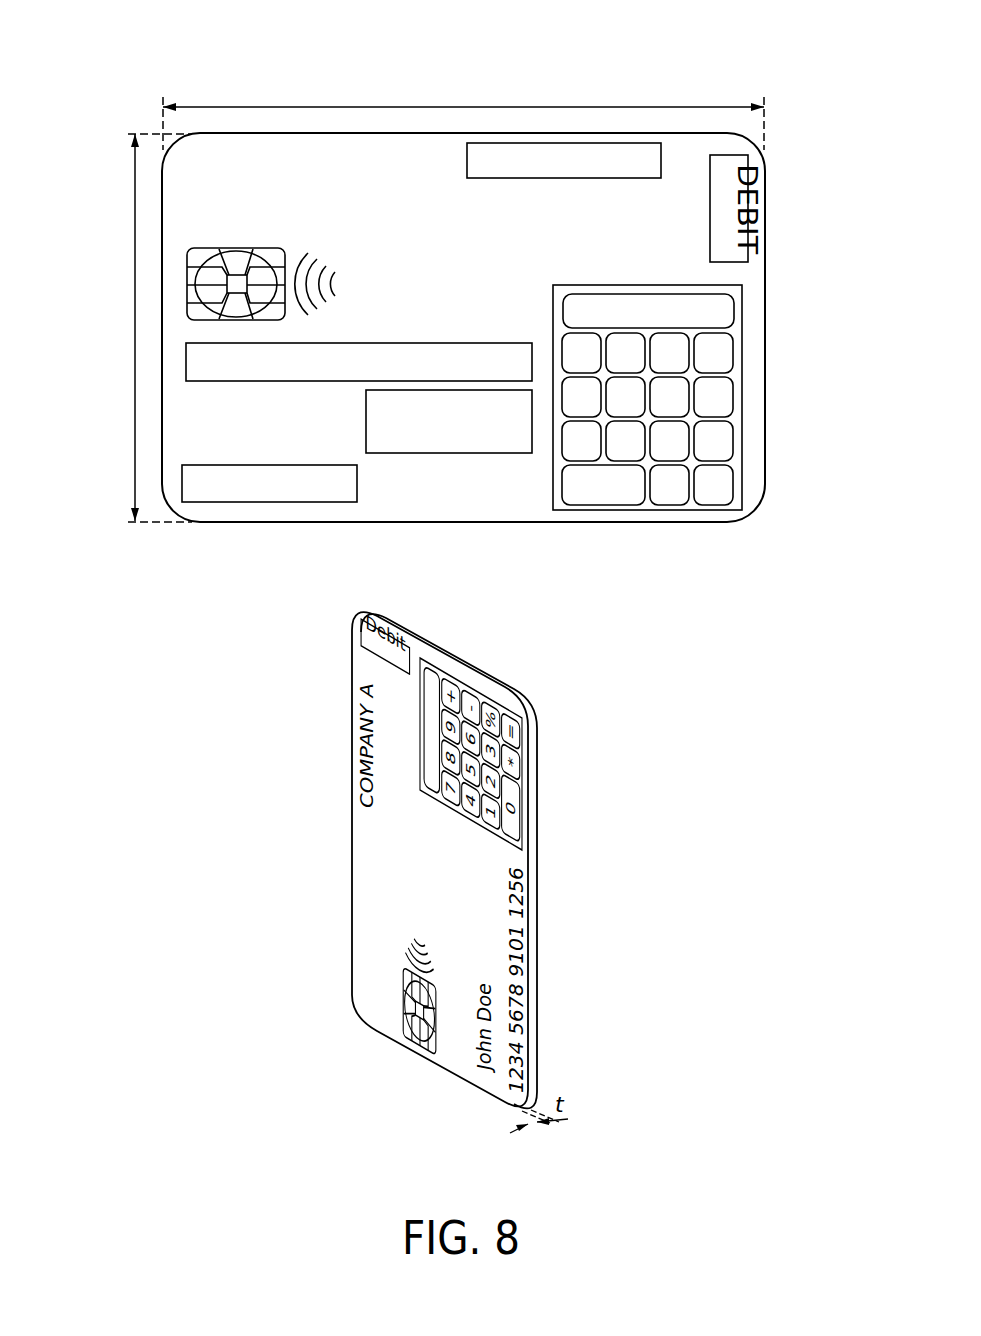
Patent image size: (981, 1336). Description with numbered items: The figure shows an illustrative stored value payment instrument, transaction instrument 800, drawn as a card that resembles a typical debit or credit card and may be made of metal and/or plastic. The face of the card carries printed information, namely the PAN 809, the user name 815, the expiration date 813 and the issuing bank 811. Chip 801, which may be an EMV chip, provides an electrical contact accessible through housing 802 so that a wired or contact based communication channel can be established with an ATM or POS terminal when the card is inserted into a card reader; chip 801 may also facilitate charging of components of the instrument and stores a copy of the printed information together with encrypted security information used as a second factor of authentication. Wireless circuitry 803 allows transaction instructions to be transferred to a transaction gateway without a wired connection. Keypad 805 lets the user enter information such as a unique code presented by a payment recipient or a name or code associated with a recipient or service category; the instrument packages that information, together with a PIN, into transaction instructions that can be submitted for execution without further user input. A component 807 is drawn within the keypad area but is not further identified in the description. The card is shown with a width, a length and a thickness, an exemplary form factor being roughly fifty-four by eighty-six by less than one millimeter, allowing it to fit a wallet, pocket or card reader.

The transaction instrument 800 is at (108, 46).
The chip 801 is at (268, 248).
The housing 802 is at (463, 522).
The wireless circuitry 803 is at (330, 284).
The keypad 805 is at (637, 510).
The calculator display 807 is at (735, 312).
The PAN 809 is at (438, 343).
The issuing bank 811 is at (467, 160).
The expiration date 813 is at (366, 422).
The user name 815 is at (266, 502).